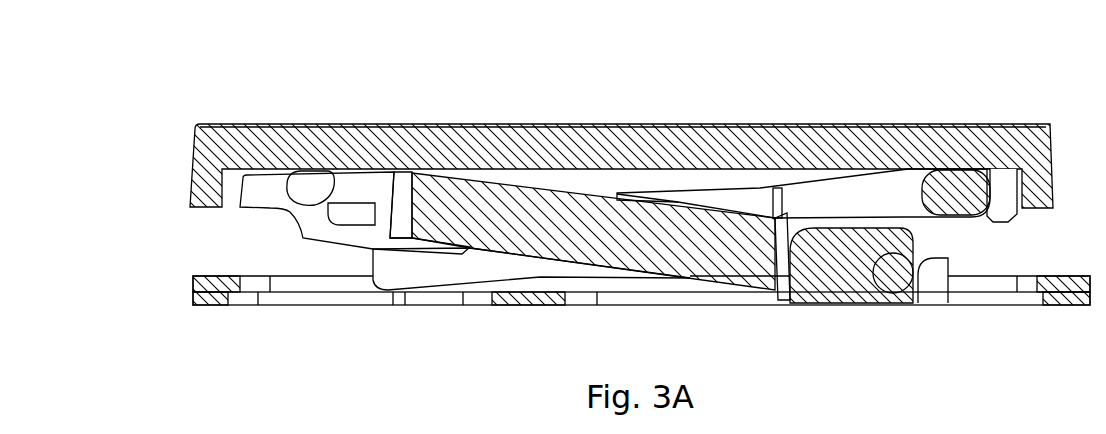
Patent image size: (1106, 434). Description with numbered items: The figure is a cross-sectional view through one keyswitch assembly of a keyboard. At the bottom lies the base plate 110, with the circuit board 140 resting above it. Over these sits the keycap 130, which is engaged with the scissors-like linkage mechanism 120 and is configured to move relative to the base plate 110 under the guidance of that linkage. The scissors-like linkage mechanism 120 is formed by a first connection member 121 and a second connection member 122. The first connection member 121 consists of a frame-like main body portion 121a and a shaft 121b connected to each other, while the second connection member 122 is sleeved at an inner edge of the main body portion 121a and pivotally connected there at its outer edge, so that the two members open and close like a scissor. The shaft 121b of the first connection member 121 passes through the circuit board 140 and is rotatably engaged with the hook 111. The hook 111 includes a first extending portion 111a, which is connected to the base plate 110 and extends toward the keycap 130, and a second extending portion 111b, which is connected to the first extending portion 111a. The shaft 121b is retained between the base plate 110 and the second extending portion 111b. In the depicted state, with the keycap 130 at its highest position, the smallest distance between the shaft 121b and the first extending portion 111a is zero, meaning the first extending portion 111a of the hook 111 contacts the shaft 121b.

The base plate 110 is at (193, 298).
The hook 111 is at (930, 47).
The first extending portion 111a is at (837, 247).
The second extending portion 111b is at (906, 222).
The scissors-like linkage mechanism 120 is at (553, 47).
The first connection member 121 is at (573, 213).
The main body portion 121a is at (722, 273).
The shaft 121b is at (890, 282).
The second connection member 122 is at (740, 205).
The keycap 130 is at (347, 137).
The circuit board 140 is at (193, 285).